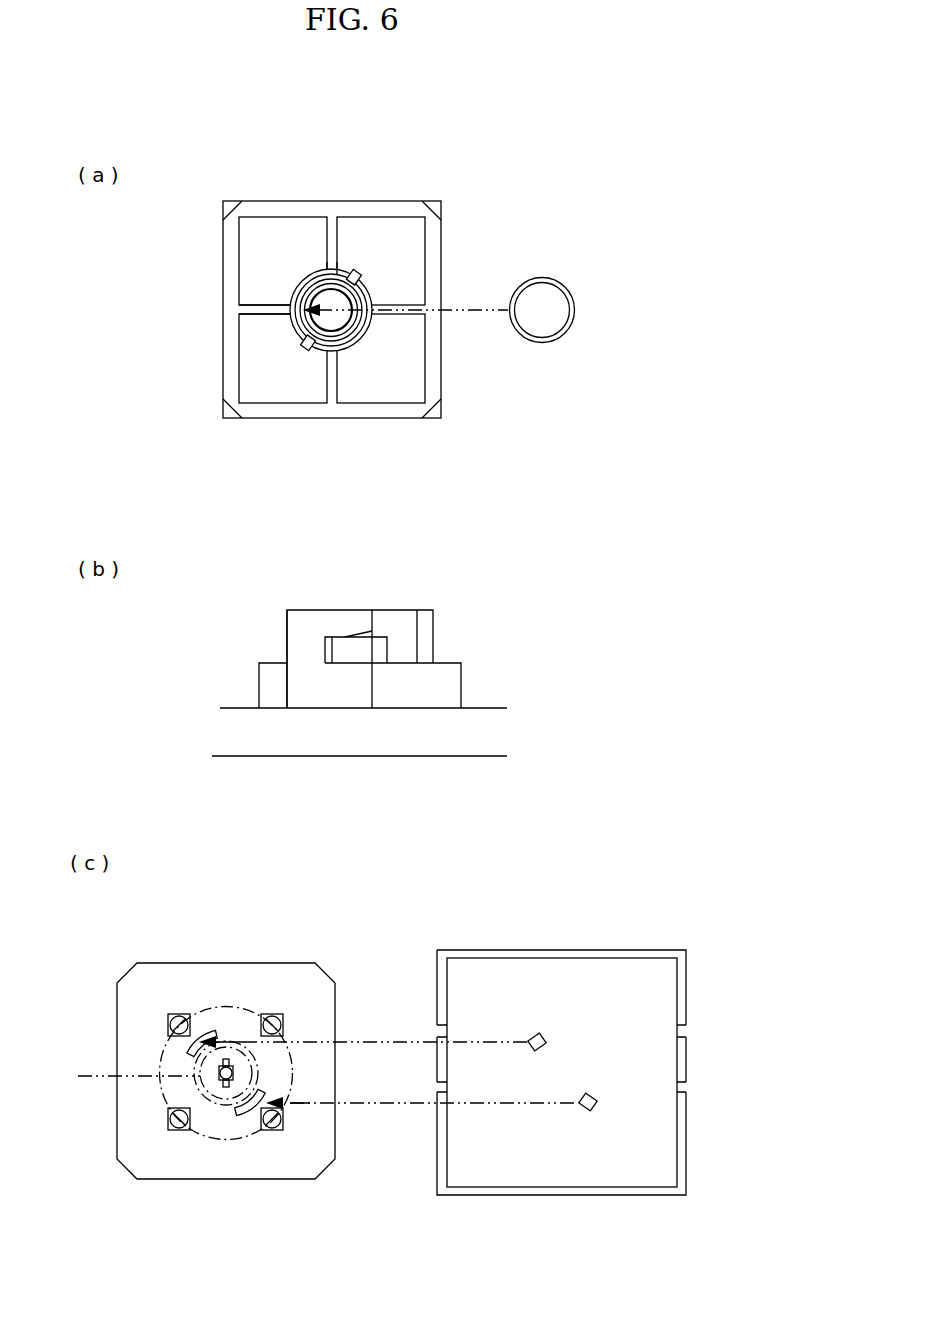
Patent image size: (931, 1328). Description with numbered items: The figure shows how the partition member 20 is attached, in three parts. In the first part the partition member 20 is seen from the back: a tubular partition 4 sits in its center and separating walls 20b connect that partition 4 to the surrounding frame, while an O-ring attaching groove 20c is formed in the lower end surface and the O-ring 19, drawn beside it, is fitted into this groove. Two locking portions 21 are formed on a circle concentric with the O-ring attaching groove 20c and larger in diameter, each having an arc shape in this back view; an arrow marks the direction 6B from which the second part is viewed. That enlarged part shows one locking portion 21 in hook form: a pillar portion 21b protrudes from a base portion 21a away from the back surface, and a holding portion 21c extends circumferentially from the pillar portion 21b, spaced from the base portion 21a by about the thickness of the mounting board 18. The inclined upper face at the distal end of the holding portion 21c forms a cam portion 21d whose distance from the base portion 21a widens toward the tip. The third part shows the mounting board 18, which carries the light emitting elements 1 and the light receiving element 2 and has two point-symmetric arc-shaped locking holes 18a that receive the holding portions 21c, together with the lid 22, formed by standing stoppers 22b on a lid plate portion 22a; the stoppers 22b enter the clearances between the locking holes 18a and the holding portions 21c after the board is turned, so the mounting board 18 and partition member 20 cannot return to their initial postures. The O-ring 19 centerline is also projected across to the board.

The light emitting element 1 is at (280, 1014).
The light receiving element 2 is at (219, 1086).
The partition 4 is at (366, 291).
The viewing direction 6B is at (325, 438).
The mounting board 18 is at (332, 960).
The locking hole 18a is at (212, 1034).
The O-ring 19 is at (573, 322).
The partition member 20 is at (462, 382).
The separating wall 20b is at (262, 313).
The O-ring attaching groove 20c is at (316, 287).
The locking portion 21 is at (353, 276).
The base portion 21a is at (329, 703).
The pillar portion 21b is at (297, 645).
The holding portion 21c is at (341, 622).
The cam portion 21d is at (352, 638).
The lid 22 is at (635, 935).
The lid plate portion 22a is at (666, 1133).
The stopper 22b is at (542, 1033).